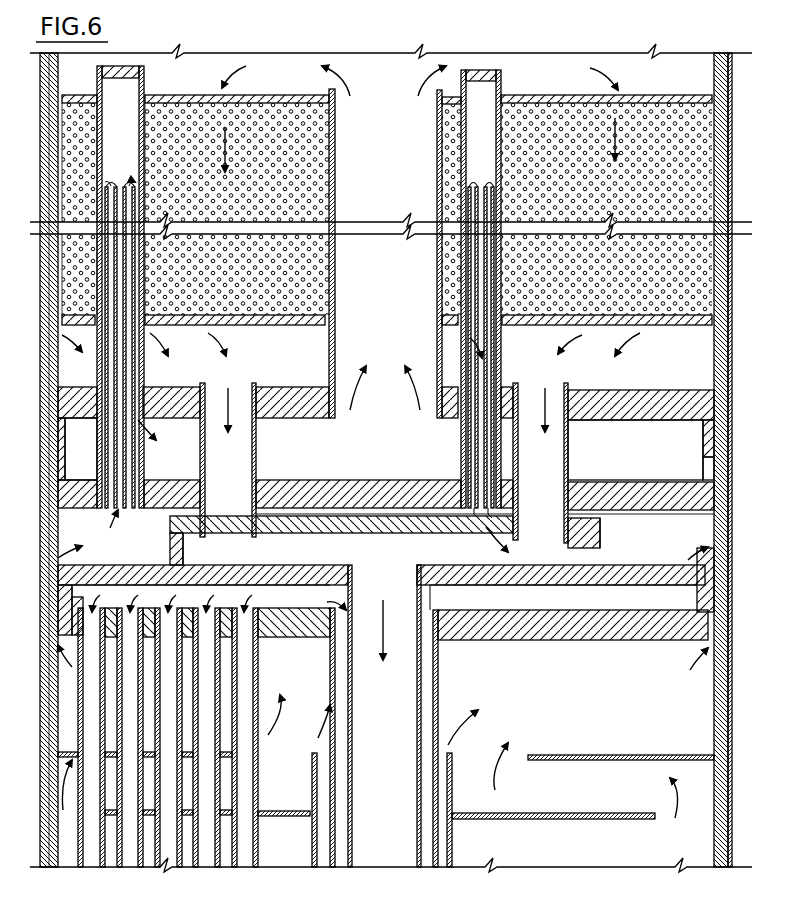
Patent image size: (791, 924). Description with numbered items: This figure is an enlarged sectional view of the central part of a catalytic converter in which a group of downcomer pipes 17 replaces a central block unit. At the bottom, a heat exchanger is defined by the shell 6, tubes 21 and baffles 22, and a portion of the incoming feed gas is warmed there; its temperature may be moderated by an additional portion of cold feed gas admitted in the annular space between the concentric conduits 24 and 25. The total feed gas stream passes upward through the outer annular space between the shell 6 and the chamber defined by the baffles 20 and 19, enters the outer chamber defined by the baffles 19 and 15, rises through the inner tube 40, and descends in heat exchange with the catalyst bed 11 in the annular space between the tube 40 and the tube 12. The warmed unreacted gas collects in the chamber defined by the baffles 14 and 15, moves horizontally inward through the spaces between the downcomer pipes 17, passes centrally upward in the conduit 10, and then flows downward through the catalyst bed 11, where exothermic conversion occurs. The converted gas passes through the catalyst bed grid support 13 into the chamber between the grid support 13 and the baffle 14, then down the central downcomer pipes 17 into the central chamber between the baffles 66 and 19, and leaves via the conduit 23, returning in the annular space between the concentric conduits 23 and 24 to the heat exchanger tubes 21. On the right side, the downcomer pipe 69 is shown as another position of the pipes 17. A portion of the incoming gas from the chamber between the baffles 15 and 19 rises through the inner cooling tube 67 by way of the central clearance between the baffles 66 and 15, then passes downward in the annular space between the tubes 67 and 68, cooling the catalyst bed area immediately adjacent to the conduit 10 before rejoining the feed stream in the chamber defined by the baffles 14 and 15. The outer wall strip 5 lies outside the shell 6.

The outer shell 5 is at (729, 655).
The shell 6 is at (713, 695).
The central conduit 10 is at (438, 150).
The catalyst bed 11 is at (569, 180).
The tube 12 is at (139, 107).
The catalyst bed grid support 13 is at (291, 326).
The baffle 14 is at (89, 385).
The baffle 15 is at (93, 509).
The downcomer pipes 17 is at (256, 468).
The baffle 19 is at (165, 565).
The baffle 20 is at (624, 645).
The tubes 21 is at (256, 690).
The baffles 22 is at (655, 754).
The conduit 23 is at (415, 732).
The conduit 24 is at (440, 686).
The conduit 25 is at (312, 790).
The inner tube 40 is at (103, 430).
The baffle 66 is at (425, 534).
The inner cooling tube 67 is at (466, 452).
The tube 68 is at (500, 108).
The downcomer pipe 69 is at (569, 478).